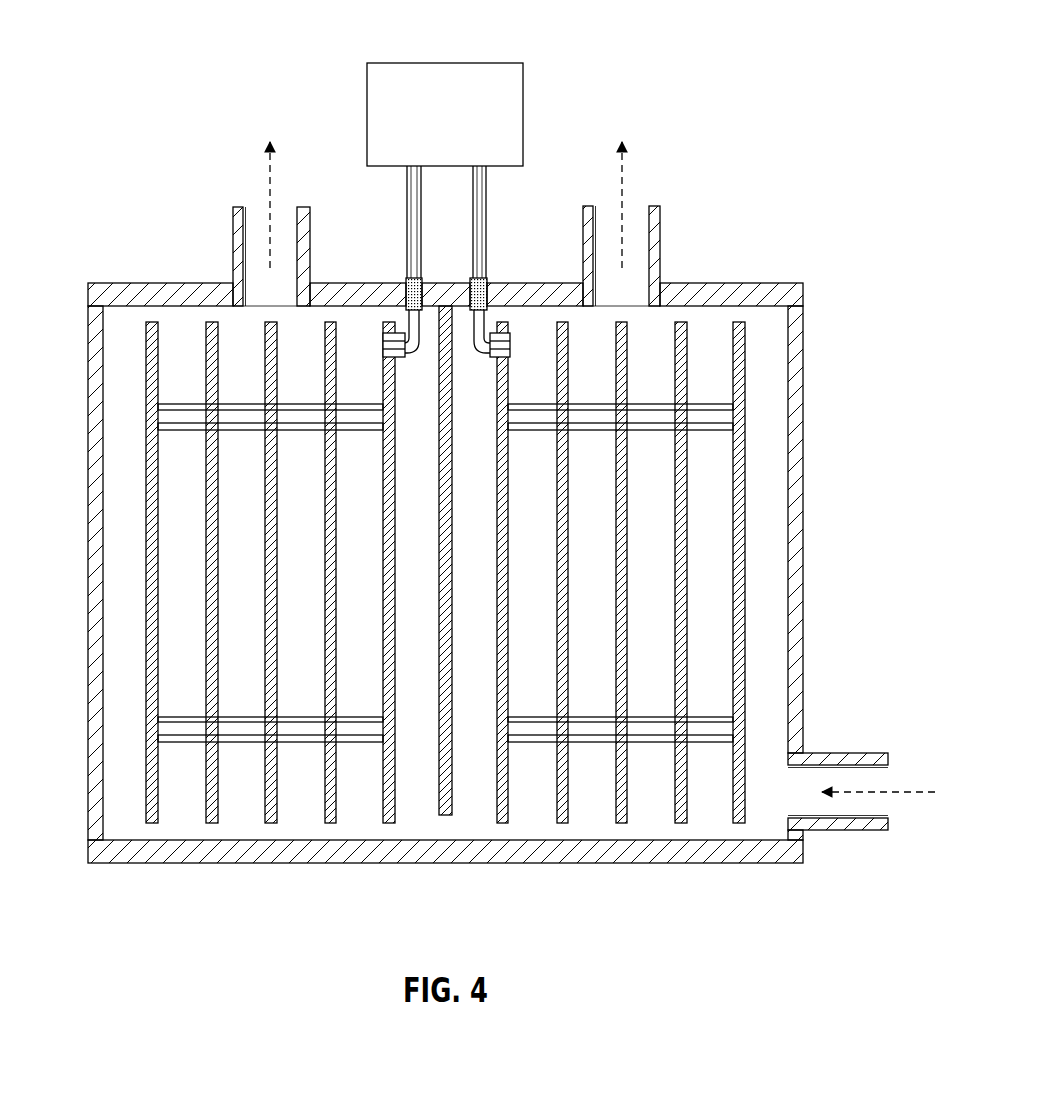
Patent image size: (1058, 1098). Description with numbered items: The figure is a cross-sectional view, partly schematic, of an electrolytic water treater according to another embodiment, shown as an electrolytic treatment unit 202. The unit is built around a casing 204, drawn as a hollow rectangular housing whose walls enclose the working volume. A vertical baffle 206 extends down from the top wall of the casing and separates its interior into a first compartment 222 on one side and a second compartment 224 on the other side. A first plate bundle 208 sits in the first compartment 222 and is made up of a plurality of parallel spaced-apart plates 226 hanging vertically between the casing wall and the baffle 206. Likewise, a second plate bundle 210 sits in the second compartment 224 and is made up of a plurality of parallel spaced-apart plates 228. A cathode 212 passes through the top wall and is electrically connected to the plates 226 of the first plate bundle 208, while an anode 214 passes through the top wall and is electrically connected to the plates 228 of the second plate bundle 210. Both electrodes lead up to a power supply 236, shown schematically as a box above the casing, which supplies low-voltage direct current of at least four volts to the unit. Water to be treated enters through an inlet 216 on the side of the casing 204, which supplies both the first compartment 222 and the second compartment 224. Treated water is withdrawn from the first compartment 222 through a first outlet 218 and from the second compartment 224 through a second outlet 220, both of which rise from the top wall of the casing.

The electrolytic treatment unit 202 is at (764, 203).
The casing 204 is at (135, 283).
The baffle 206 is at (452, 790).
The first plate bundle 208 is at (757, 592).
The second plate bundle 210 is at (137, 598).
The cathode 212 is at (485, 210).
The anode 214 is at (406, 210).
The inlet 216 is at (858, 753).
The first outlet 218 is at (660, 240).
The second outlet 220 is at (232, 233).
The first compartment 222 is at (772, 465).
The second compartment 224 is at (120, 468).
The plates 226 is at (681, 823).
The plates 228 is at (330, 823).
The power supply 236 is at (487, 63).